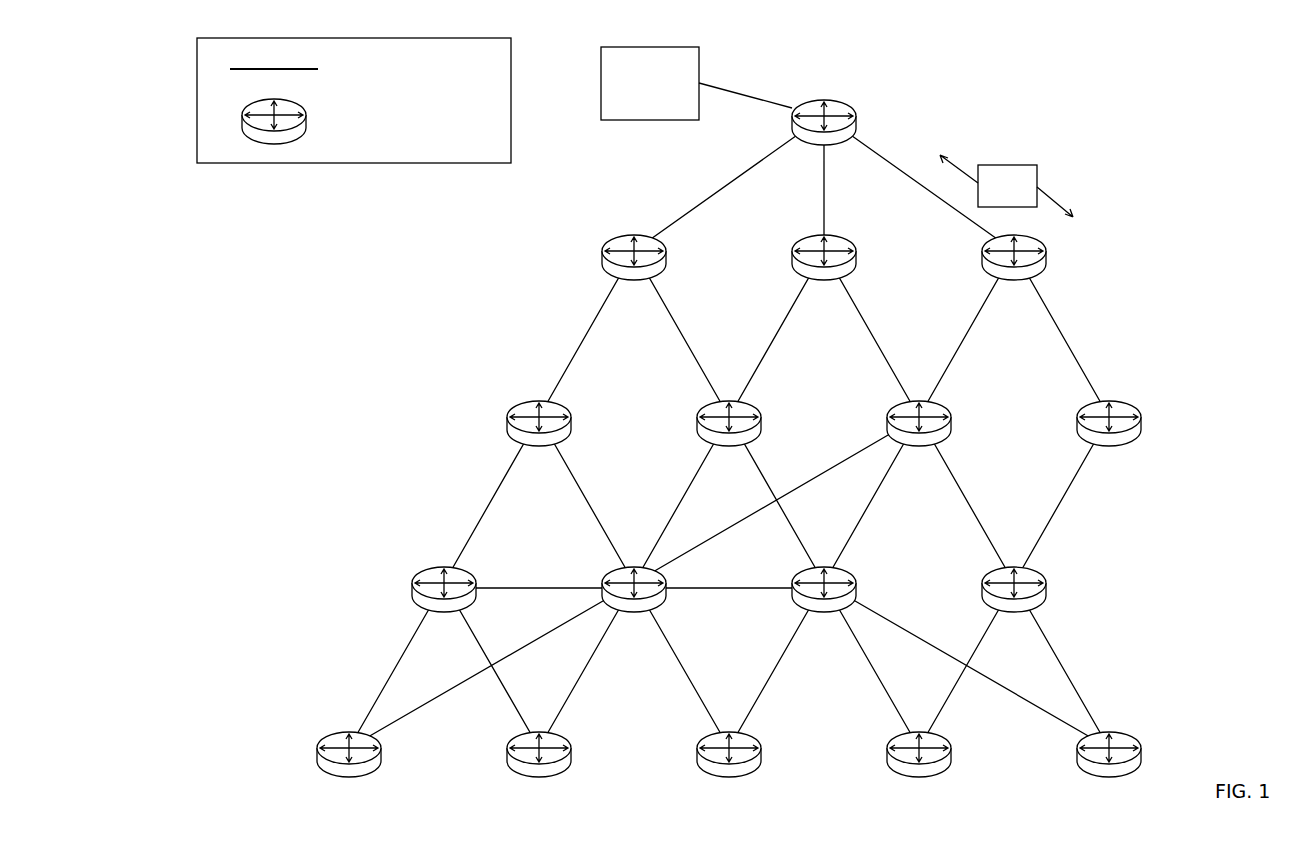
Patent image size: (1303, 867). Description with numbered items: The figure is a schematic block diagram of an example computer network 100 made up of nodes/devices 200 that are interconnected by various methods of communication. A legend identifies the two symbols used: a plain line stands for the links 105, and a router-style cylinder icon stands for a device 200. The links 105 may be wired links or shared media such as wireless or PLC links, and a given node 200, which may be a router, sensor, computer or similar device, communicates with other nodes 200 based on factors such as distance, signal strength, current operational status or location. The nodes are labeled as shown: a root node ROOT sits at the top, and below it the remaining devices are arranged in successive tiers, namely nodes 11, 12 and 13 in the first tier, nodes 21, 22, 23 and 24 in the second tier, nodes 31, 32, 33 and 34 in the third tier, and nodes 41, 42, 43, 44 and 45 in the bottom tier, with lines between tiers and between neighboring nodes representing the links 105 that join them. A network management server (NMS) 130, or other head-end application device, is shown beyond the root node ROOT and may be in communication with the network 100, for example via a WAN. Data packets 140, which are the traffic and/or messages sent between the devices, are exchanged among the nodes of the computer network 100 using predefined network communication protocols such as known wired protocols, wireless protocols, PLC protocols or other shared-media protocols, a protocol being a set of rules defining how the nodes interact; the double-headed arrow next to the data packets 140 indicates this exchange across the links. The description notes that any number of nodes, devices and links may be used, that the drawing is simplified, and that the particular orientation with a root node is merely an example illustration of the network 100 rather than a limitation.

The computer network 100 is at (1120, 71).
The links 105 is at (669, 403).
The network management server (NMS) 130 is at (634, 104).
The data packets 140 is at (1022, 196).
The nodes/devices 200 is at (349, 121).
The root node ROOT is at (856, 122).
The node 11 is at (634, 271).
The node 12 is at (824, 271).
The node 13 is at (1014, 271).
The node 21 is at (539, 437).
The node 22 is at (729, 437).
The node 23 is at (919, 437).
The node 24 is at (1109, 437).
The node 31 is at (444, 603).
The node 32 is at (634, 603).
The node 33 is at (824, 603).
The node 34 is at (1014, 603).
The node 41 is at (349, 768).
The node 42 is at (539, 768).
The node 43 is at (729, 768).
The node 44 is at (919, 768).
The node 45 is at (1109, 768).